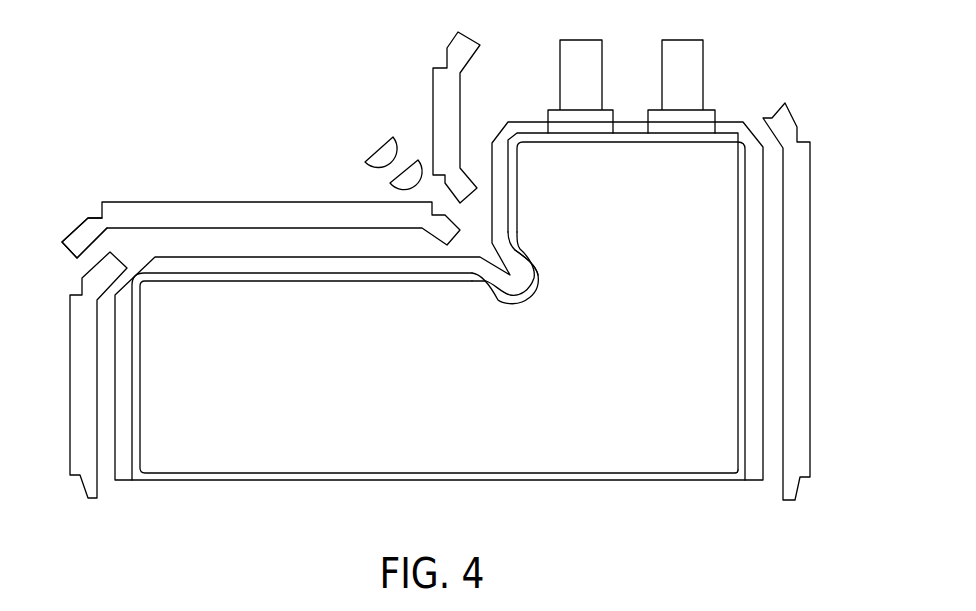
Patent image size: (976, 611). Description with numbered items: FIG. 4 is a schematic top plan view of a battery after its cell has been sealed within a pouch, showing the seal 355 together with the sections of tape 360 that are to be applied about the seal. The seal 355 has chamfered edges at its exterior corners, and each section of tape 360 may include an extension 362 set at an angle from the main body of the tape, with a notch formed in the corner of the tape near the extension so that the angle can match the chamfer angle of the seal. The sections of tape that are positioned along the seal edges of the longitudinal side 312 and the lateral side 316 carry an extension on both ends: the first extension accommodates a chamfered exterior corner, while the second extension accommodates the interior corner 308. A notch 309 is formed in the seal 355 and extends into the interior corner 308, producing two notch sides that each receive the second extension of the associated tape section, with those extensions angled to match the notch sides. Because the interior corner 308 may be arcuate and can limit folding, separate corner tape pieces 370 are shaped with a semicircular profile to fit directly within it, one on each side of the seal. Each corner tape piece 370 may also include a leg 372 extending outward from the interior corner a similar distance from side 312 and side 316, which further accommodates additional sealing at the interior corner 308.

The interior corner 308 is at (507, 304).
The notch 309 is at (535, 262).
The longitudinal side 312 is at (313, 272).
The lateral side 316 is at (512, 212).
The seal 355 is at (123, 482).
The tape 360 is at (189, 202).
The extension 362 is at (73, 227).
The corner tape pieces 370 is at (416, 162).
The leg 372 is at (378, 147).